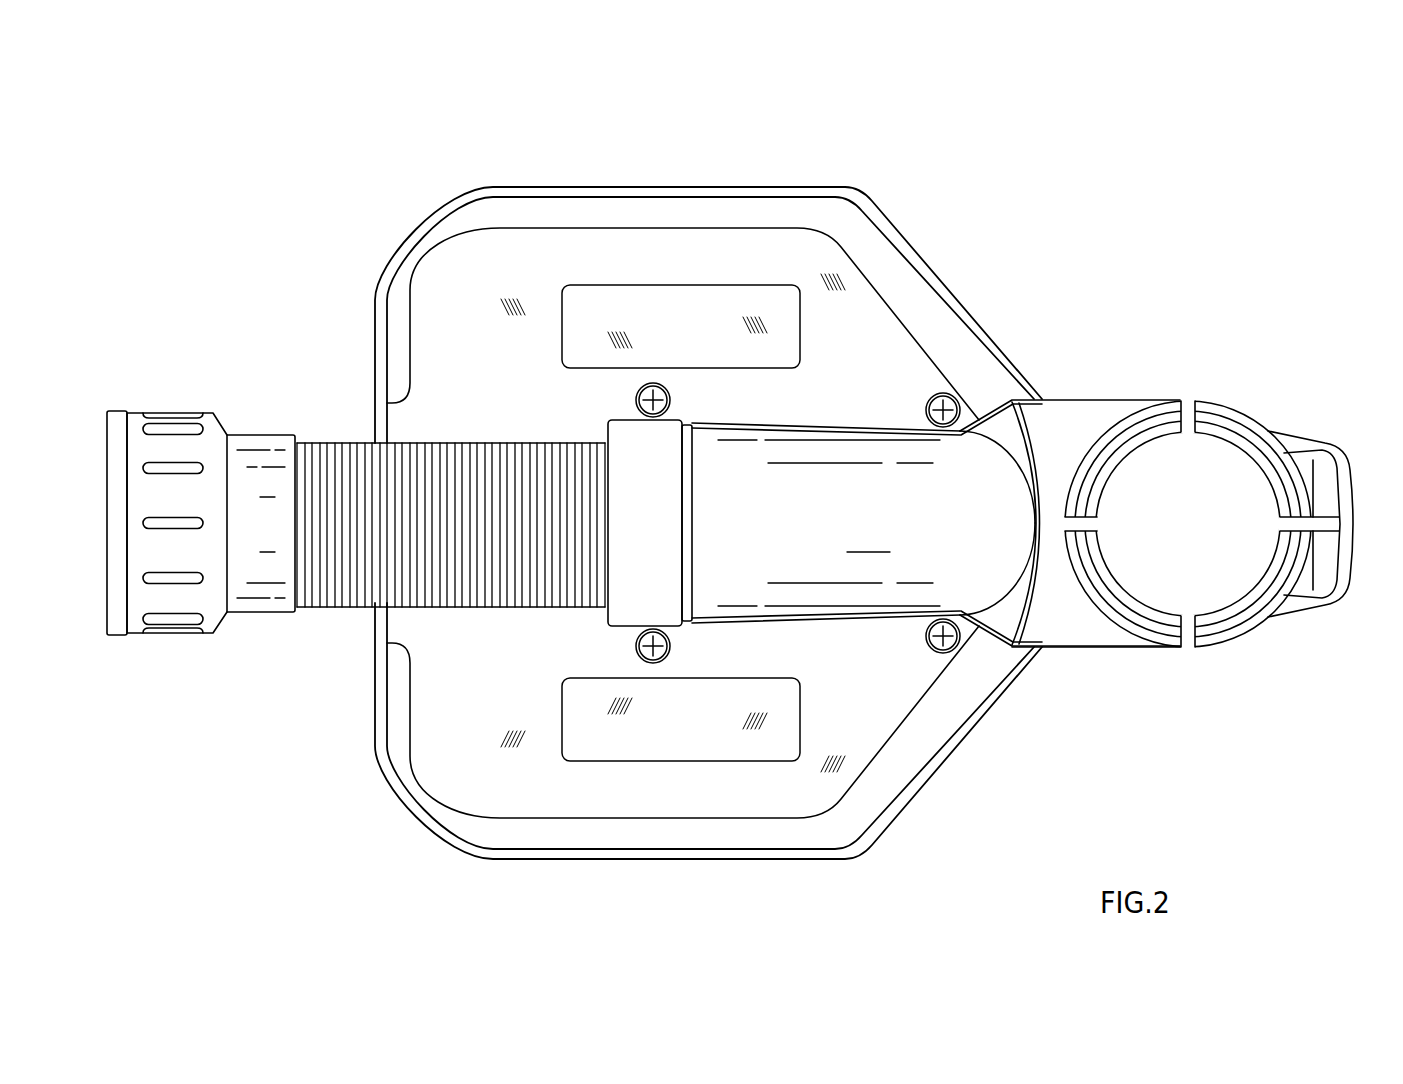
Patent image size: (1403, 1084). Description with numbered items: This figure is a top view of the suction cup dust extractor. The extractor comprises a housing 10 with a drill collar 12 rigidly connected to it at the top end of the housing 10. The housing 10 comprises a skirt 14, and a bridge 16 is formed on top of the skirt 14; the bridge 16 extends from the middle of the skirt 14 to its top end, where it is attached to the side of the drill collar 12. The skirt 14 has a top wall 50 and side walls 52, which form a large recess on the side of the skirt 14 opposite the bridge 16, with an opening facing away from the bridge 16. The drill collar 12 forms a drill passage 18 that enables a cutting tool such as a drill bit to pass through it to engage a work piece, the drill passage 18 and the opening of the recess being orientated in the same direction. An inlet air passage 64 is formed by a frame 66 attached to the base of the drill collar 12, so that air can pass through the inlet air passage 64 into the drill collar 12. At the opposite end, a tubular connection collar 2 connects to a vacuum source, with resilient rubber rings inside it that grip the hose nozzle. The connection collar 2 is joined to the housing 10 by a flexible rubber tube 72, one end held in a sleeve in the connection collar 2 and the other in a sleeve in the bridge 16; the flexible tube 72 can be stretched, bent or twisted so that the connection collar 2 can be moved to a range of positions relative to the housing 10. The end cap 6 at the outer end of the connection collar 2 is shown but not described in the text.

The housing 10 is at (743, 484).
The connection collar 2 is at (135, 620).
The end cap 6 is at (118, 627).
The flexible tube 72 is at (332, 598).
The side walls 52 is at (586, 190).
The top wall 50 is at (477, 280).
The skirt 14 is at (512, 390).
The bridge 16 is at (777, 541).
The drill passage 18 is at (1193, 519).
The drill collar 12 is at (1227, 645).
The inlet air passage 64 is at (1312, 470).
The frame 66 is at (1337, 573).